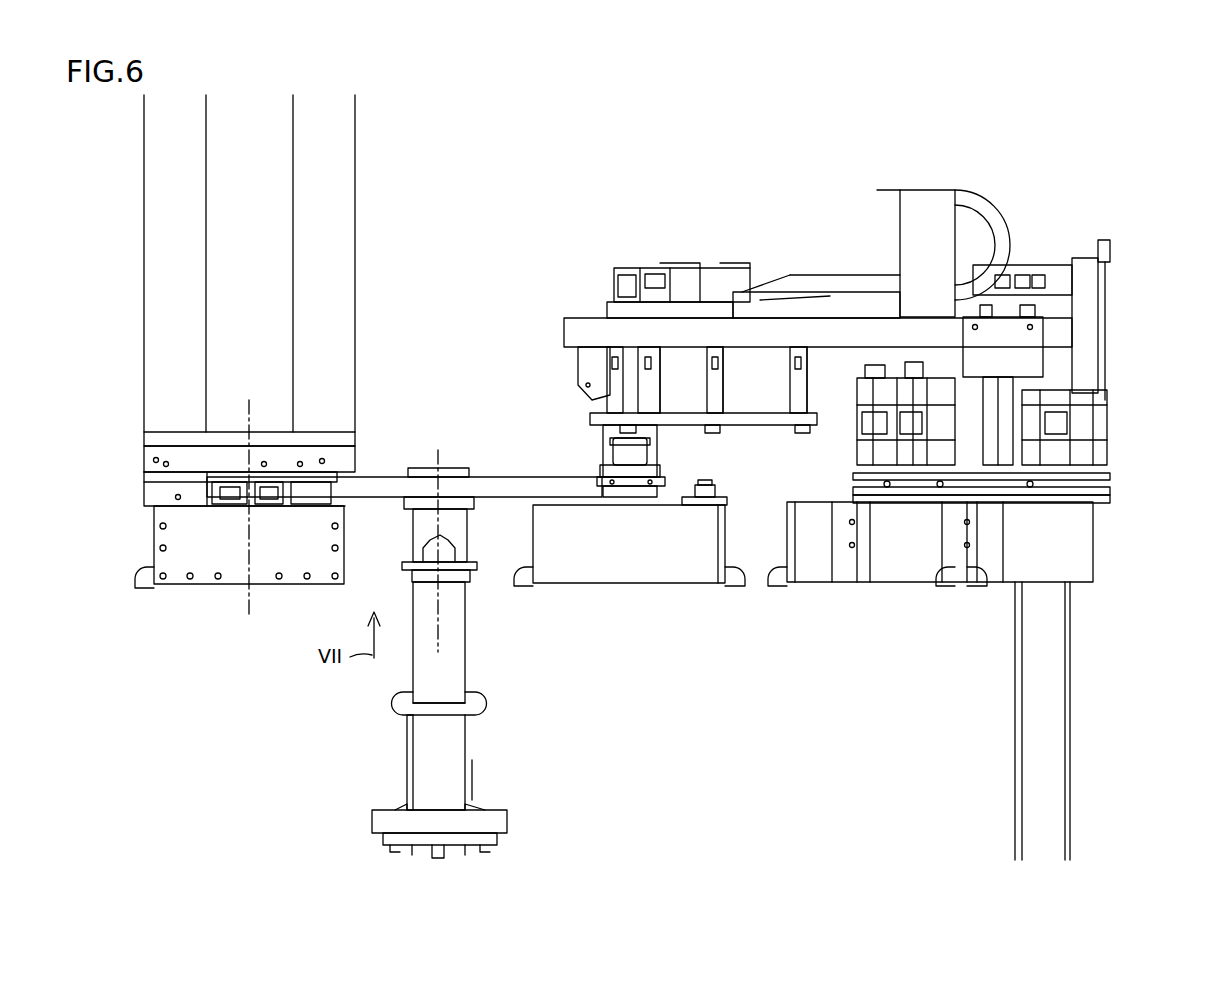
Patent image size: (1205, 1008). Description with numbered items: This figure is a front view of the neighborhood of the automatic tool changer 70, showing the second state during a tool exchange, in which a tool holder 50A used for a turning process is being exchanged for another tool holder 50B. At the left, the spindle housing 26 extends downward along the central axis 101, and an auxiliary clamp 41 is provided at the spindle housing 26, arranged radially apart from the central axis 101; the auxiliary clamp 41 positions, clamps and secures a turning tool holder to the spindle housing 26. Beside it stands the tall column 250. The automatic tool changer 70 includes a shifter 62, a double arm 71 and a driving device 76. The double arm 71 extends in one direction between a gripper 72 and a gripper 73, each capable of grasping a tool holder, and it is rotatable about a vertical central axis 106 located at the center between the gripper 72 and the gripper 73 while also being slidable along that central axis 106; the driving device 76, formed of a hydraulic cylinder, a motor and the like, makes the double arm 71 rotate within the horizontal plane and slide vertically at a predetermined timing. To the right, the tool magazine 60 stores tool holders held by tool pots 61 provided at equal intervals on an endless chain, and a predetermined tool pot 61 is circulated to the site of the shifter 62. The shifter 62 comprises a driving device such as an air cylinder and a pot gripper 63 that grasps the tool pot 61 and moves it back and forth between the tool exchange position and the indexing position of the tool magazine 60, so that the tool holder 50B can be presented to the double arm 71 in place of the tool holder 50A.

The column 250 is at (345, 183).
The spindle housing 26 is at (341, 460).
The auxiliary clamp 41 is at (144, 494).
The gripper 72 is at (305, 500).
The tool holder 50A is at (203, 586).
The central axis 101 is at (250, 560).
The double arm 71 is at (488, 486).
The driving device 76 is at (452, 607).
The central axis 106 is at (444, 638).
The tool holder 50B is at (588, 563).
The gripper 73 is at (627, 507).
The tool pot 61 is at (603, 447).
The shifter 62 is at (600, 300).
The pot gripper 63 is at (578, 368).
The automatic tool changer 70 is at (627, 256).
The tool magazine 60 is at (1053, 256).